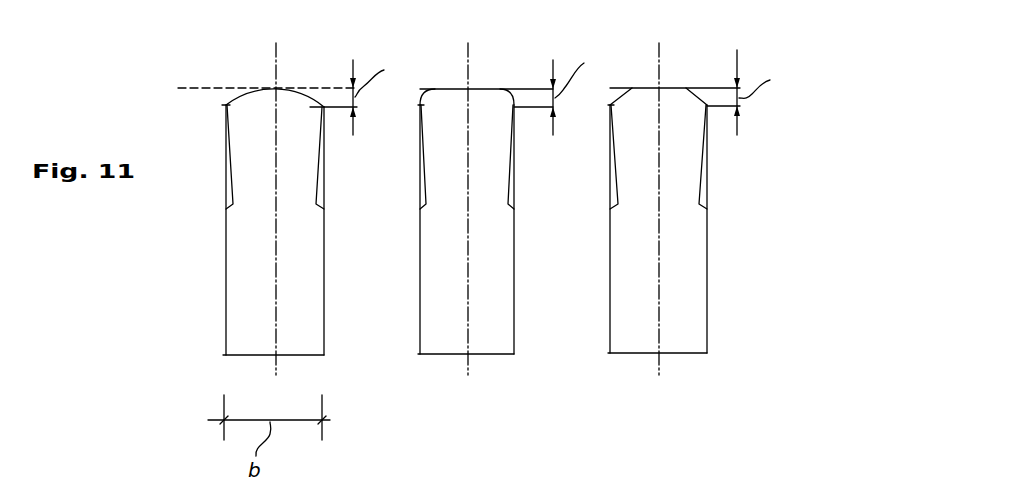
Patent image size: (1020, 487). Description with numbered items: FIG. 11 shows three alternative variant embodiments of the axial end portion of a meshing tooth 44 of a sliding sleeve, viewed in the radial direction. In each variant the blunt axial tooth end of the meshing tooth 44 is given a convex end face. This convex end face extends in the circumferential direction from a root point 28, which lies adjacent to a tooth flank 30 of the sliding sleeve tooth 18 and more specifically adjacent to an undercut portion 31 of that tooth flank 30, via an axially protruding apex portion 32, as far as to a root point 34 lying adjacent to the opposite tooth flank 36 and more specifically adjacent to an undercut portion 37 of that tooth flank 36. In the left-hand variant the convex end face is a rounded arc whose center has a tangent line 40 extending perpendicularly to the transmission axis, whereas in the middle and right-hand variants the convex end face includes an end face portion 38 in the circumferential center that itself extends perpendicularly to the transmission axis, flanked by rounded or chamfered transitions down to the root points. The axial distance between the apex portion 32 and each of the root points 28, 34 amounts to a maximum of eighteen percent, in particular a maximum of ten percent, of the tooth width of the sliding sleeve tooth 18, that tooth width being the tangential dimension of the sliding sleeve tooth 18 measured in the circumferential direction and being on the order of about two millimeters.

The sliding sleeve tooth 18 is at (164, 252).
The root point 28 is at (226, 104).
The tooth flank 30 is at (226, 255).
The undercut portion 31 is at (228, 183).
The apex portion 32 is at (276, 88).
The root point 34 is at (323, 107).
The tooth flank 36 is at (324, 285).
The undercut portion 37 is at (320, 183).
The end face portion 38 is at (453, 89).
The tangent line 40 is at (208, 88).
The meshing tooth 44 is at (310, 330).